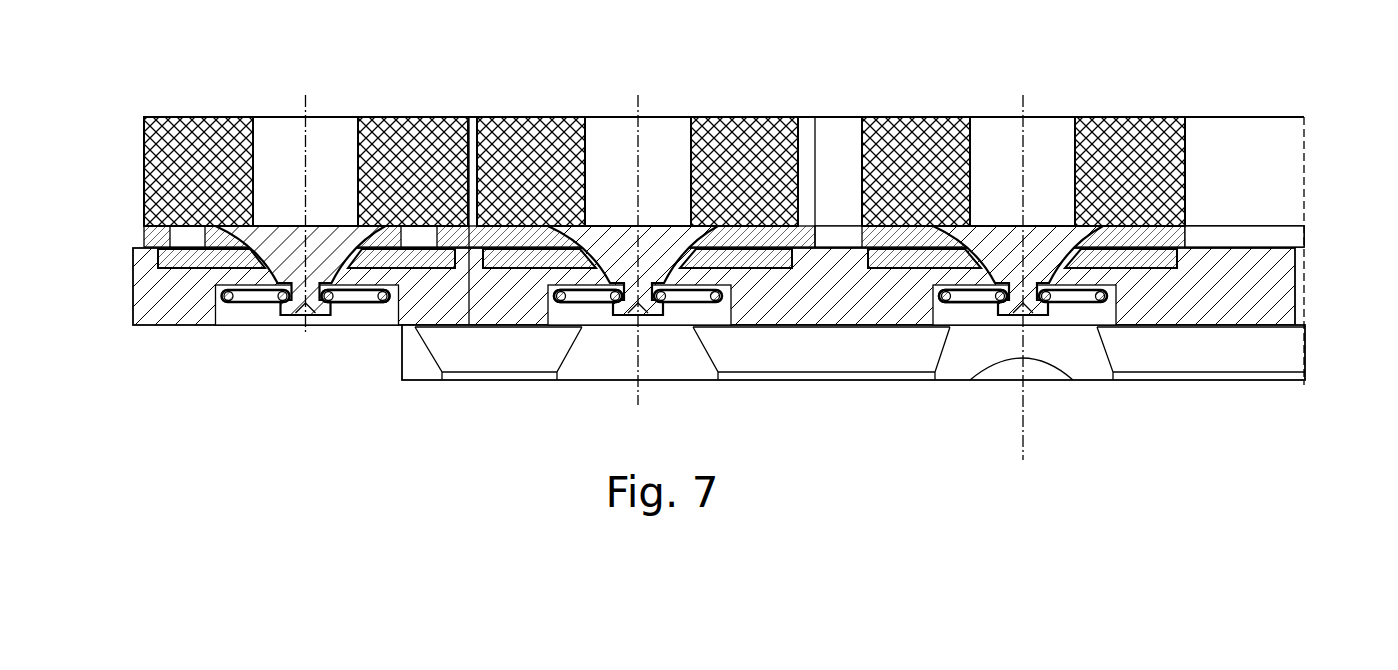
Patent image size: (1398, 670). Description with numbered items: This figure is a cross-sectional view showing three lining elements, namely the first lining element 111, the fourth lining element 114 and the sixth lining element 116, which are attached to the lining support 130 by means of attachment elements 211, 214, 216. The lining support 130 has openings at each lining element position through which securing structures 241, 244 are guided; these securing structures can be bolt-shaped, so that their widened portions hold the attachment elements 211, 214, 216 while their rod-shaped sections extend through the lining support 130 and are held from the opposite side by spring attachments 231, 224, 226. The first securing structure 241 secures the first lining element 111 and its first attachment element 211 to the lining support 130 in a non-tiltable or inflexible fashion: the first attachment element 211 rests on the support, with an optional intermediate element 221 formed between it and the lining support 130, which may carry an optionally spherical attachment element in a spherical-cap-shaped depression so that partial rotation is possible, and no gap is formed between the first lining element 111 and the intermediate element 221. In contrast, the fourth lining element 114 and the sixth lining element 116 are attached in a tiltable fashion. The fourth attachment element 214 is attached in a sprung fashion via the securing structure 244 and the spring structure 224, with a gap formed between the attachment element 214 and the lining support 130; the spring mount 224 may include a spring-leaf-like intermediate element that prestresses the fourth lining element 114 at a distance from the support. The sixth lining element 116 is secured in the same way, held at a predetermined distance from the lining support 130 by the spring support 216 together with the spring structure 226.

The first lining element 111 is at (186, 147).
The first securing structure 241 is at (313, 240).
The fourth lining element 114 is at (494, 140).
The securing structure 244 is at (610, 240).
The fourth attachment element 214 is at (730, 245).
The sixth lining element 116 is at (914, 140).
The attachment element 216 is at (1176, 236).
The first attachment element 211 is at (150, 239).
The lining support 130 is at (146, 290).
The intermediate element 221 is at (192, 262).
The spring attachment 231 is at (350, 298).
The spring structure 224 is at (578, 300).
The spring structure 226 is at (965, 298).